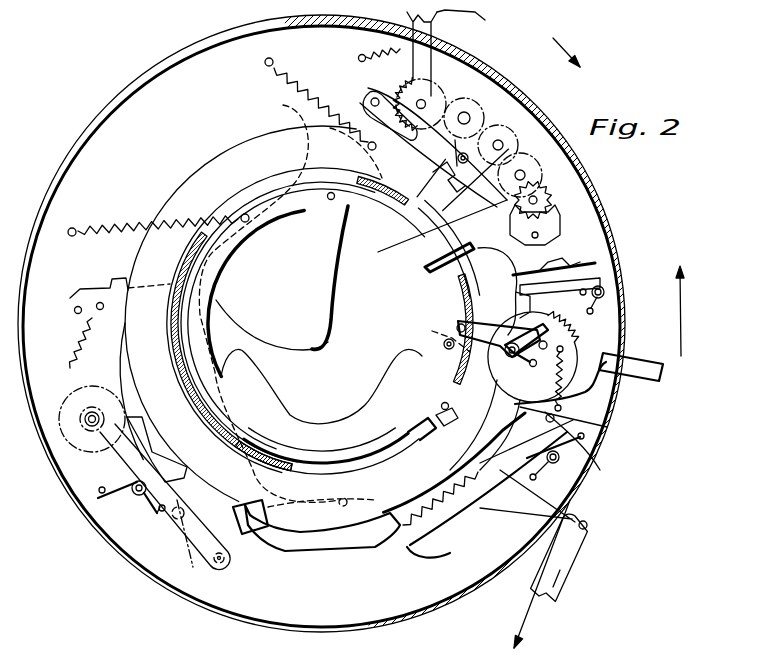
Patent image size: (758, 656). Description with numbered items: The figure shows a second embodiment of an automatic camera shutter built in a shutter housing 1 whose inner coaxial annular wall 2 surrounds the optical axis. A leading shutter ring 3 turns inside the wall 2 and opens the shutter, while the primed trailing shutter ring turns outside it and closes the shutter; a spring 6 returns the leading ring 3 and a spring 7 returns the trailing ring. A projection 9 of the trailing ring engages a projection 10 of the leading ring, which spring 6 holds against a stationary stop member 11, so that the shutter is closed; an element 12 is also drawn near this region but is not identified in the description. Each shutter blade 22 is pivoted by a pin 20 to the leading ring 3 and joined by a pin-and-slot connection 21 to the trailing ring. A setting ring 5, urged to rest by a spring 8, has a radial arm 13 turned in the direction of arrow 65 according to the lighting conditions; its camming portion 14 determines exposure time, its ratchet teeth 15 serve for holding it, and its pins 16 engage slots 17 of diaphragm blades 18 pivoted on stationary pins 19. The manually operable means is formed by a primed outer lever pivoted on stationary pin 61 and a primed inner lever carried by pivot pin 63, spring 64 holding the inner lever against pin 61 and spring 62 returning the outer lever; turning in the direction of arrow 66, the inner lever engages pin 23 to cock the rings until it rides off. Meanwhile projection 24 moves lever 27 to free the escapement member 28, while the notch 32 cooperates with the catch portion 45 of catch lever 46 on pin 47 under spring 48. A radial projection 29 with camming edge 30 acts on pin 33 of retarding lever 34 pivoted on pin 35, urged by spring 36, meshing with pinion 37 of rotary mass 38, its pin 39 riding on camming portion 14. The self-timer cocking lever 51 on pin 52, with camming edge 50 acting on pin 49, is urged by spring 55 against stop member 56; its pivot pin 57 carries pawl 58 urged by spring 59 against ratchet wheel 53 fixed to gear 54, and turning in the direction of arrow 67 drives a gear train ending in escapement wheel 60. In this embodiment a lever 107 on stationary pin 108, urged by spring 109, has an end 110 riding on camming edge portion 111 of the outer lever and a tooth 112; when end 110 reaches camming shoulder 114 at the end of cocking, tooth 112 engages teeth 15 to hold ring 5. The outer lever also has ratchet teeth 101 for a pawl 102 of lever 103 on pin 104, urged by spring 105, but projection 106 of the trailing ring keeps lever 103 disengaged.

The shutter housing 1 is at (120, 97).
The inner coaxial annular wall 2 is at (178, 321).
The leading shutter ring 3 is at (205, 340).
The setting ring 5 is at (122, 363).
The spring 6 is at (130, 225).
The spring 7 is at (286, 74).
The spring 8 is at (68, 352).
The projection 9 is at (428, 440).
The projection 10 is at (440, 428).
The stationary stop member 11 is at (448, 409).
The lever 12 is at (76, 313).
The radial arm 13 is at (592, 514).
The camming portion 14 is at (296, 556).
The ratchet teeth 15 is at (399, 546).
The pins 16 is at (347, 500).
The slots 17 is at (296, 517).
The diaphragm blade 18 is at (333, 411).
The stationary pivot pin 19 is at (282, 456).
The pin 20 is at (328, 200).
The pin-and-slot connection 21 is at (283, 122).
The shutter blade 22 is at (313, 303).
The pin 23 is at (443, 345).
The projection 24 is at (426, 266).
The lever 27 is at (512, 271).
The escapement member 28 is at (556, 226).
The radial projection 29 is at (202, 550).
The camming edge 30 is at (250, 526).
The notch 32 is at (434, 232).
The pin 33 is at (178, 524).
The retarding lever 34 is at (118, 465).
The stationary pivot pin 35 is at (139, 496).
The spring 36 is at (118, 497).
The pinion 37 is at (90, 431).
The rotary mass 38 is at (78, 438).
The pin 39 is at (225, 565).
The catch portion 45 is at (505, 204).
The catch lever 46 is at (384, 140).
The stationary pivot pin 47 is at (446, 162).
The spring 48 is at (466, 152).
The pin 49 is at (371, 102).
The camming edge portion 50 is at (374, 91).
The cocking lever 51 is at (485, 20).
The stationary pin 52 is at (470, 100).
The ratchet wheel 53 is at (424, 103).
The gear 54 is at (500, 128).
The spring 55 is at (366, 52).
The stop member 56 is at (309, 40).
The pivot pin 57 is at (433, 40).
The pawl 58 is at (412, 88).
The spring 59 is at (358, 59).
The escapement wheel 60 is at (548, 197).
The stationary pivot pin 61 is at (547, 344).
The spring 62 is at (553, 407).
The pivot pin 63 is at (536, 364).
The spring 64 is at (546, 336).
The arrow 65 is at (530, 623).
The arrow 66 is at (681, 320).
The arrow 67 is at (580, 42).
The ratchet teeth 101 is at (574, 378).
The pawl 102 is at (548, 292).
The lever 103 is at (584, 290).
The pin 104 is at (605, 293).
The spring 105 is at (594, 311).
The projection 106 is at (516, 297).
The lever 107 is at (492, 526).
The stationary pin 108 is at (560, 450).
The spring 109 is at (582, 444).
The end 110 is at (576, 416).
The camming edge portion 111 is at (500, 381).
The tooth 112 is at (414, 557).
The camming shoulder 114 is at (432, 331).